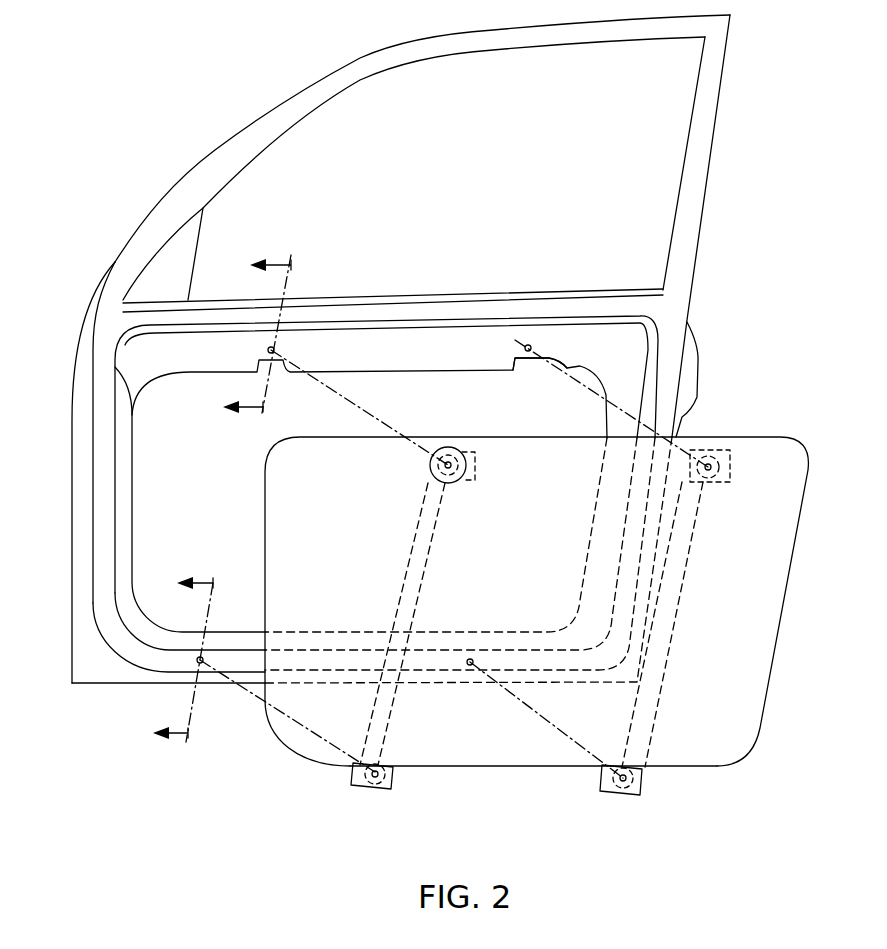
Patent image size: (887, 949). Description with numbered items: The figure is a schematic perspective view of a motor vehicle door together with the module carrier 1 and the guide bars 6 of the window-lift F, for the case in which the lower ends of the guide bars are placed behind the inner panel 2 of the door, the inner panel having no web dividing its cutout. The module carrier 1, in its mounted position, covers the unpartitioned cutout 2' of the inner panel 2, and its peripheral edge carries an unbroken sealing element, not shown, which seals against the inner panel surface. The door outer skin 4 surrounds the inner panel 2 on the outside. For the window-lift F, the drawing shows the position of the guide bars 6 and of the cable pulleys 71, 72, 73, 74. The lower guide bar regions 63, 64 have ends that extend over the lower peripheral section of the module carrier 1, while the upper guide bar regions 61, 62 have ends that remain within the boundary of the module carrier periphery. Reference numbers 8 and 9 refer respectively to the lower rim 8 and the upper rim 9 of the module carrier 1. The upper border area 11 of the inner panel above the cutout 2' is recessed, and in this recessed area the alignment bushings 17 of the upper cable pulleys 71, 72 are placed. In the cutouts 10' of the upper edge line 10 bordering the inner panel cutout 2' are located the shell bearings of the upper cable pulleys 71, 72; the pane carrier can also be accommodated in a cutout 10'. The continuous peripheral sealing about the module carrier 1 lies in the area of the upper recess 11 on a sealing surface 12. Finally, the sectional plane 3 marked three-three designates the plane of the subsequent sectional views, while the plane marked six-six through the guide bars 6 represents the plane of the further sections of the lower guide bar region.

The module carrier 1 is at (752, 631).
The inner panel 2 is at (378, 343).
The unpartitioned cutout 2' is at (386, 455).
The sectional plane 3- 3 is at (245, 338).
The door outer panel 4 is at (78, 478).
The guide bars 6 is at (674, 724).
The lower rim of the module carrier 8 is at (524, 785).
The upper rim of the module carrier 9 is at (537, 428).
The upper edge line 10 is at (369, 495).
The cutouts 10' is at (557, 361).
The upper border area 11 is at (392, 300).
The sealing surface 12 is at (620, 317).
The alignment bushings 17 is at (527, 345).
The upper guide bar end region 61 is at (412, 491).
The upper guide bar end region 62 is at (716, 502).
The lower guide bar end region 63 is at (333, 780).
The lower guide bar end region 64 is at (664, 756).
The upper cable pulley 71 is at (445, 465).
The upper cable pulley 72 is at (720, 450).
The lower cable pulley 73 is at (373, 786).
The lower cable pulley 74 is at (623, 794).
The window-lift F is at (697, 598).